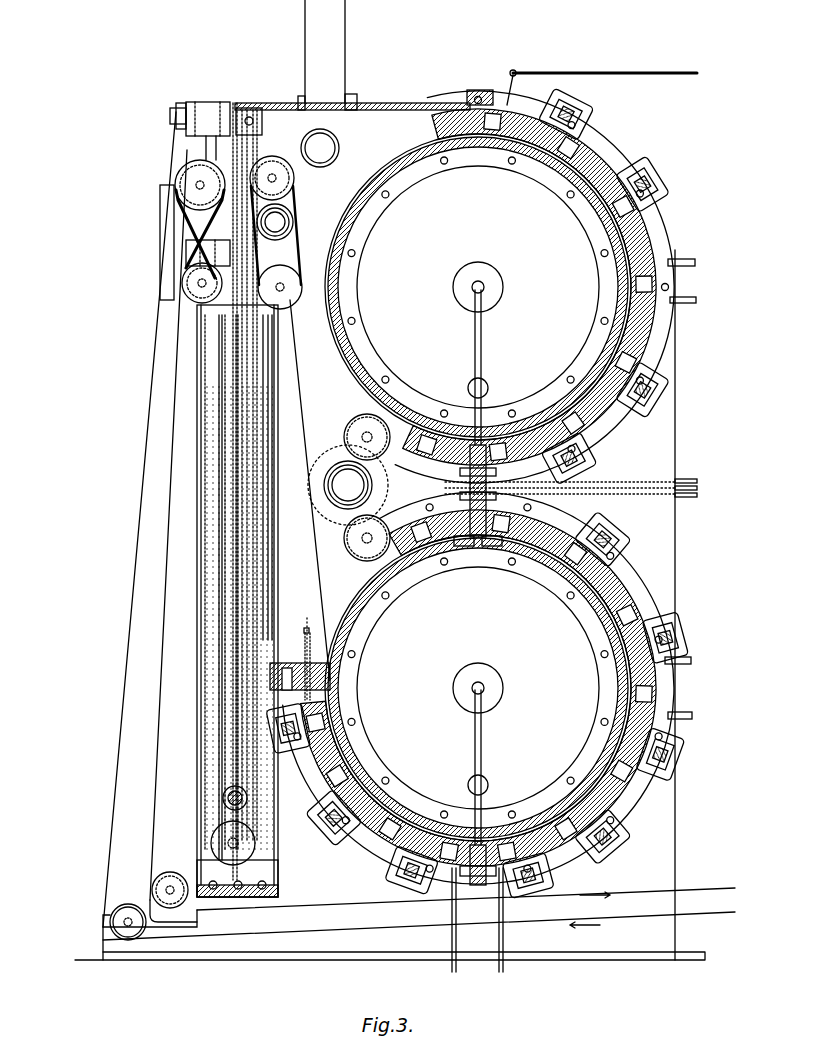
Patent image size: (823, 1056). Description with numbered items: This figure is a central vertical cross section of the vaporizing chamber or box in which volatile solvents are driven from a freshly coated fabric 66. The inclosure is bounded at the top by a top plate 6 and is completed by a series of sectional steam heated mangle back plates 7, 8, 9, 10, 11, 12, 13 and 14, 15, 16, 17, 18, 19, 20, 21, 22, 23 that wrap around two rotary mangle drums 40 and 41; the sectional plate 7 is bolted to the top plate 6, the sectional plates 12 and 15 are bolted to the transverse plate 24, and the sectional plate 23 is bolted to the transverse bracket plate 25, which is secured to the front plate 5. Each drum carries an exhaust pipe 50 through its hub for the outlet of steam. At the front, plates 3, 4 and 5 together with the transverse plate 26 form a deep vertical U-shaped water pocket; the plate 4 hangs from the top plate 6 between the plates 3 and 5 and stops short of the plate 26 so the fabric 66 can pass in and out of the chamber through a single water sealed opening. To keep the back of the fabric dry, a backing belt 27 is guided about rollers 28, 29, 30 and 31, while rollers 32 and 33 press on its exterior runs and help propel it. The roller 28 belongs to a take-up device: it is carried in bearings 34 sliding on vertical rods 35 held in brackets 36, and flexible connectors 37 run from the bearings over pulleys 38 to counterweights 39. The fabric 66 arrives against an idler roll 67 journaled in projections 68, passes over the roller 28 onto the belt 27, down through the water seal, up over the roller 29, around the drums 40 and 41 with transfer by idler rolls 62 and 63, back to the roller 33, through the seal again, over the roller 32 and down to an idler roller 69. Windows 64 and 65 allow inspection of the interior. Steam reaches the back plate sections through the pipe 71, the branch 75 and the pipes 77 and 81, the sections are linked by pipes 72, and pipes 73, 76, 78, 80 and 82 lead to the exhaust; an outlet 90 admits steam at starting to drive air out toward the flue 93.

The plate 3 is at (210, 515).
The plate 4 is at (258, 532).
The front plate 5 is at (270, 458).
The top plate 6 is at (400, 103).
The sectional steam heated mangle back plate 7 is at (560, 108).
The segmental back plate section 8 is at (610, 175).
The segmental back plate section 9 is at (650, 262).
The segmental back plate section 10 is at (668, 350).
The segmental back plate section 11 is at (640, 437).
The sectional plate 12 is at (495, 405).
The segmental back plate section 13 is at (442, 400).
The segmental back plate section 14 is at (458, 548).
The sectional plate 15 is at (496, 548).
The segmental back plate section 16 is at (640, 565).
The segmental back plate section 17 is at (660, 655).
The segmental back plate section 18 is at (692, 716).
The segmental back plate section 19 is at (620, 815).
The segmental back plate section 20 is at (560, 862).
The segmental back plate section 21 is at (460, 872).
The segmental back plate section 22 is at (365, 830).
The sectional plate 23 is at (345, 695).
The transverse plate 24 is at (478, 545).
The transverse bracket plate 25 is at (283, 665).
The transverse plate 26 is at (278, 893).
The backing belt 27 is at (210, 440).
The roller 28 is at (175, 180).
The roller 29 is at (272, 160).
The roller 30 is at (211, 842).
The roller 31 is at (223, 800).
The roller 32 is at (182, 280).
The roller 33 is at (290, 308).
The bearings 34 is at (190, 225).
The vertical rods 35 is at (206, 148).
The brackets 36 is at (200, 104).
The flexible connectors 37 is at (176, 115).
The pulleys 38 is at (176, 108).
The counterweights 39 is at (160, 205).
The drum 40 is at (560, 252).
The drum 41 is at (560, 680).
The exhaust pipe 50 is at (482, 330).
The idler roll 62 is at (355, 422).
The idler roll 63 is at (358, 555).
The window 64 is at (325, 135).
The window 65 is at (330, 468).
The fabric 66 is at (308, 410).
The idler roll 67 is at (110, 905).
The projections 68 is at (110, 930).
The idler roller 69 is at (155, 878).
The live steam pipe extension 71 is at (515, 72).
The pipes 72 is at (585, 118).
The pipe 73 is at (695, 262).
The branch 75 is at (696, 300).
The pipe 76 is at (650, 483).
The pipe 77 is at (698, 490).
The pipe 78 is at (690, 660).
The pipe 80 is at (505, 940).
The pipe 81 is at (306, 628).
The pipe 82 is at (450, 940).
The outlet 90 is at (312, 640).
The flue 93 is at (305, 38).